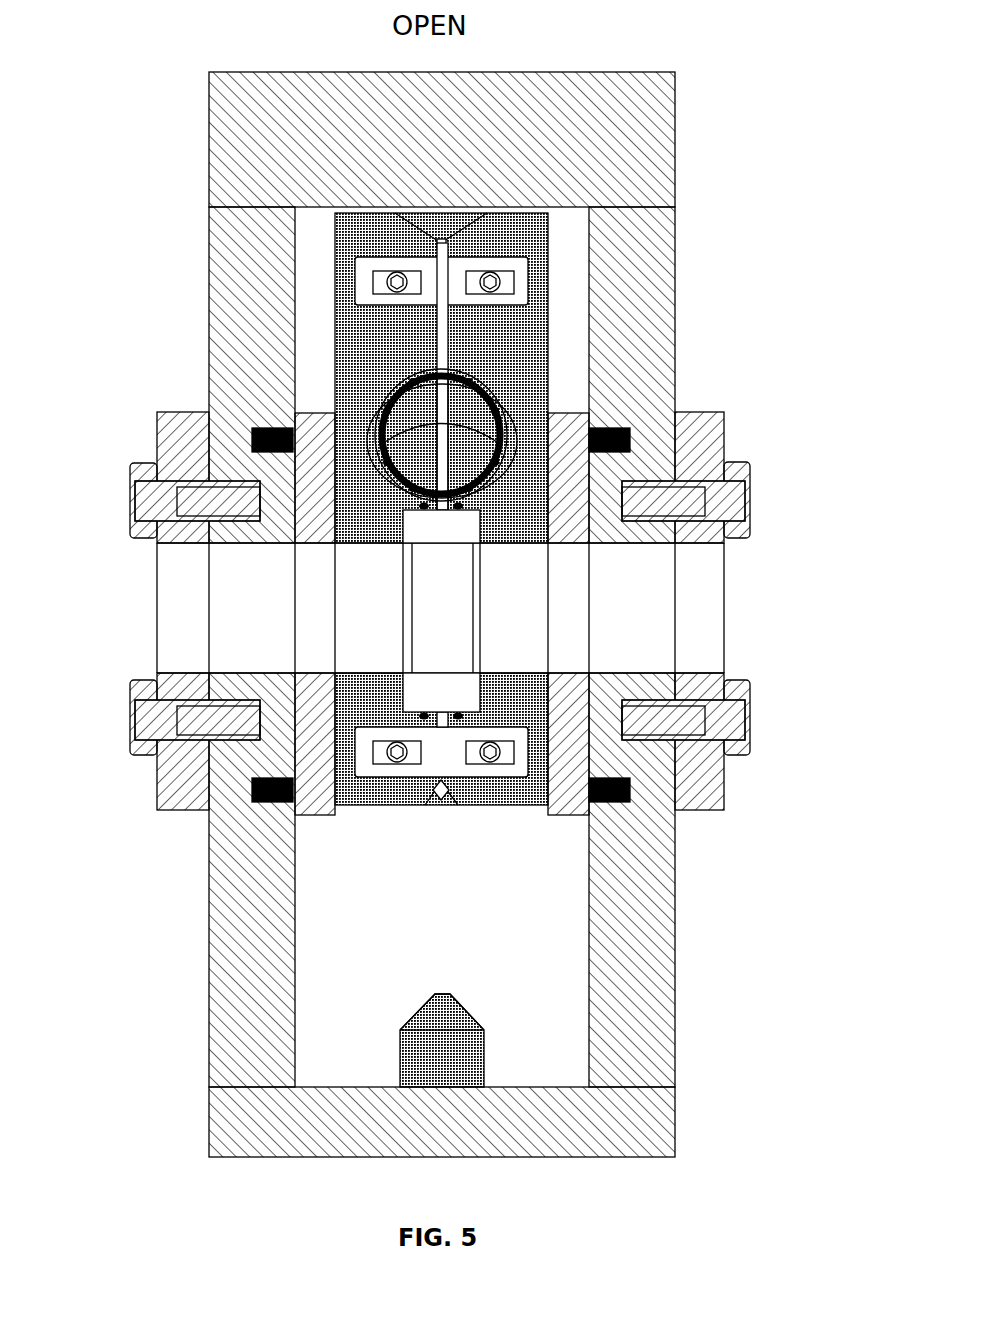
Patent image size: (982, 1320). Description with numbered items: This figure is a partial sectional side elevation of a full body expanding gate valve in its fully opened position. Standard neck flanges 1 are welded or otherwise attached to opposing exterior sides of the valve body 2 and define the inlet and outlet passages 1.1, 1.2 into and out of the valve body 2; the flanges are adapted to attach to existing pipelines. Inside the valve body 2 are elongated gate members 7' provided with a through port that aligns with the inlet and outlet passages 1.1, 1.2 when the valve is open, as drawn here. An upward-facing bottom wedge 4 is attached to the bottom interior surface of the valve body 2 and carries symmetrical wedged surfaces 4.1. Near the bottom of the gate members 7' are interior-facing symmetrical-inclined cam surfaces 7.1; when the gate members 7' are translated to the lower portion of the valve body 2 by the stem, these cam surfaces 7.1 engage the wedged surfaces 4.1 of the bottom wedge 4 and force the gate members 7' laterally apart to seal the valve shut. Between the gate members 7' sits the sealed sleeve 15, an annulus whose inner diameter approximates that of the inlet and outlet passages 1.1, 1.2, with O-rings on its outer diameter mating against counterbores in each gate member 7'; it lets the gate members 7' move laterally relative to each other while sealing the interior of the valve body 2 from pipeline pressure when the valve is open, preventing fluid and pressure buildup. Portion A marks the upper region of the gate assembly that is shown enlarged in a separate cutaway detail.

The valve body 2 is at (675, 300).
The neck flanges 1 is at (724, 432).
The inlet/outlet passage 1.1 is at (650, 675).
The inlet/outlet passage 1.2 is at (248, 673).
The elongated gate members 7' is at (432, 509).
The portion A is at (368, 455).
The sealed sleeve 15 is at (442, 547).
The interior-facing symmetrical-inclined cam surfaces 7.1 is at (441, 803).
The upward-facing bottom wedge 4 is at (452, 1060).
The symmetrical wedged surfaces 4.1 is at (423, 1010).